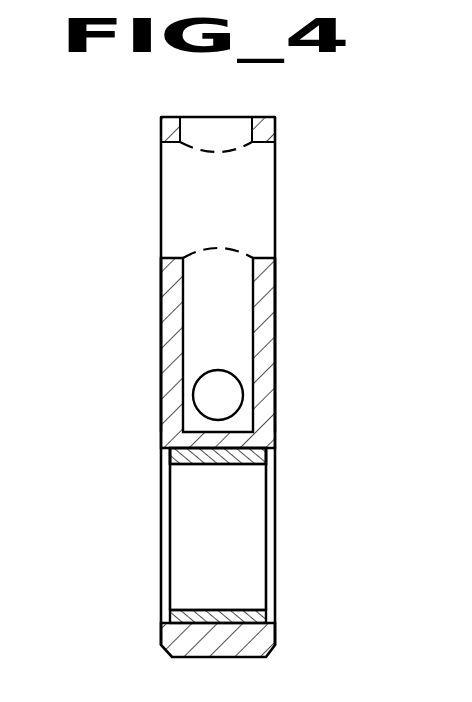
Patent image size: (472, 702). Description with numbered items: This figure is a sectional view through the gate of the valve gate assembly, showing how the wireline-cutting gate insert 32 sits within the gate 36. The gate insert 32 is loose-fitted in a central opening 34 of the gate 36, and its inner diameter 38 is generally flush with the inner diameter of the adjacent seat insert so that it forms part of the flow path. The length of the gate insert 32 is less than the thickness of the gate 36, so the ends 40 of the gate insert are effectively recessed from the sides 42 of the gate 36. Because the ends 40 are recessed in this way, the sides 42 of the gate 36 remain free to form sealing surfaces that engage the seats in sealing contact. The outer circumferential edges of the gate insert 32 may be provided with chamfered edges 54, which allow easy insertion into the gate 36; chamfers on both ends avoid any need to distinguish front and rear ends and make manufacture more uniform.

The wireline-cutting gate insert 32 is at (194, 464).
The central opening 34 is at (200, 610).
The gate 36 is at (275, 291).
The inner diameter 38 is at (243, 610).
The ends 40 is at (266, 458).
The sides 42 is at (161, 342).
The chamfered edges 54 is at (170, 455).